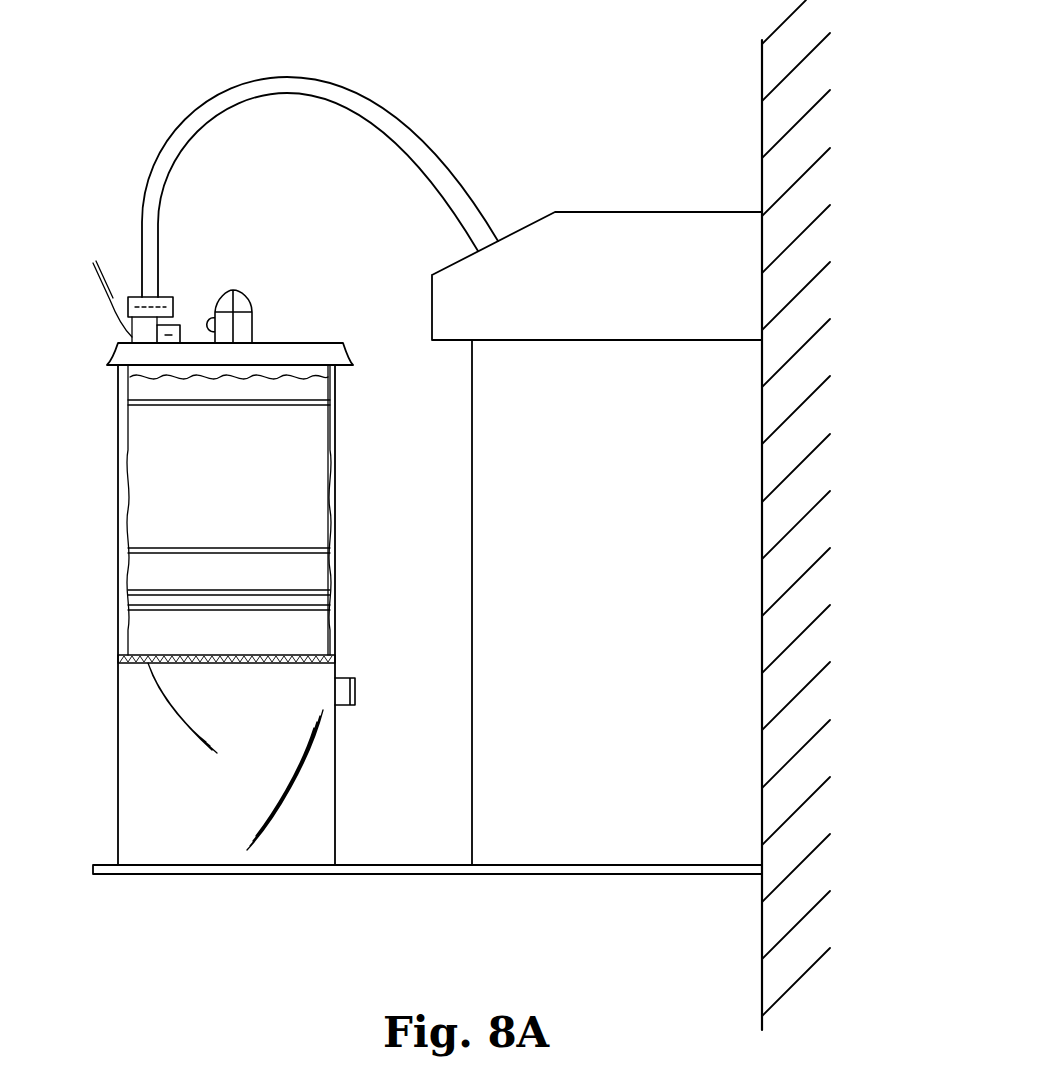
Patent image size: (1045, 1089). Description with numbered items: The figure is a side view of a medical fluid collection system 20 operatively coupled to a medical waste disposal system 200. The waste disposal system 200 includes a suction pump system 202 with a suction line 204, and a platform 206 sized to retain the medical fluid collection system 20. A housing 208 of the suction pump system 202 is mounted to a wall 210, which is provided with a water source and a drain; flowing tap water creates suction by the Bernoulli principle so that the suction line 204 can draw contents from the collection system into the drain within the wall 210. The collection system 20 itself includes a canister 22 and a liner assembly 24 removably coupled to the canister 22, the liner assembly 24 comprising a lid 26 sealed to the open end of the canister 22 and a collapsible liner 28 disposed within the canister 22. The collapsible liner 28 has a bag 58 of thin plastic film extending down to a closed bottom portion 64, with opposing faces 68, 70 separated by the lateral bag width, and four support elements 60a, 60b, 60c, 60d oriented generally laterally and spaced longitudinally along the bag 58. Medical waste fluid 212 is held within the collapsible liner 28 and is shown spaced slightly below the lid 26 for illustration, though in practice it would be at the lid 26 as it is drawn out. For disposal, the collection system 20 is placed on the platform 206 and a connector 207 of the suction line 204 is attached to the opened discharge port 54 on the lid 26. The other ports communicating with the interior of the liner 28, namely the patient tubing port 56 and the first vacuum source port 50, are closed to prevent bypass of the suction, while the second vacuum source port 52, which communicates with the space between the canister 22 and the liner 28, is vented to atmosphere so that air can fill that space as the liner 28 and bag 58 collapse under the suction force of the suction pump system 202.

The medical waste disposal system 200 is at (196, 55).
The suction pump system 202 is at (680, 197).
The suction line 204 is at (387, 108).
The platform 206 is at (421, 875).
The connector 207 is at (163, 305).
The housing 208 is at (640, 489).
The wall 210 is at (782, 86).
The medical waste fluid 212 is at (312, 388).
The medical fluid collection system 20 is at (98, 395).
The canister 22 is at (118, 742).
The liner assembly 24 is at (185, 672).
The lid 26 is at (276, 355).
The collapsible liner 28 is at (140, 490).
The first vacuum source port 50 is at (170, 338).
The second vacuum source port 52 is at (356, 690).
The discharge port 54 is at (168, 322).
The patient tubing port 56 is at (231, 320).
The bag 58 is at (156, 432).
The support element 60a is at (318, 403).
The support element 60b is at (318, 548).
The support element 60c is at (330, 592).
The support element 60d is at (332, 606).
The closed bottom portion 64 is at (245, 664).
The face 68 is at (120, 527).
The face 70 is at (332, 465).